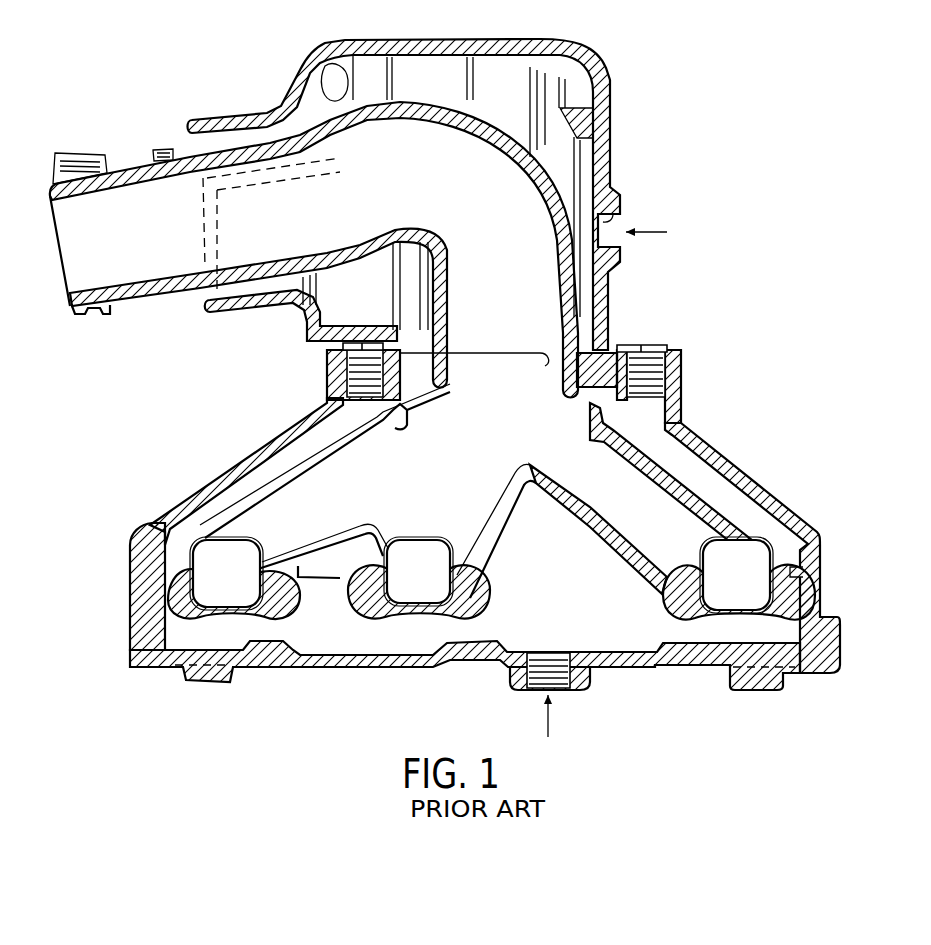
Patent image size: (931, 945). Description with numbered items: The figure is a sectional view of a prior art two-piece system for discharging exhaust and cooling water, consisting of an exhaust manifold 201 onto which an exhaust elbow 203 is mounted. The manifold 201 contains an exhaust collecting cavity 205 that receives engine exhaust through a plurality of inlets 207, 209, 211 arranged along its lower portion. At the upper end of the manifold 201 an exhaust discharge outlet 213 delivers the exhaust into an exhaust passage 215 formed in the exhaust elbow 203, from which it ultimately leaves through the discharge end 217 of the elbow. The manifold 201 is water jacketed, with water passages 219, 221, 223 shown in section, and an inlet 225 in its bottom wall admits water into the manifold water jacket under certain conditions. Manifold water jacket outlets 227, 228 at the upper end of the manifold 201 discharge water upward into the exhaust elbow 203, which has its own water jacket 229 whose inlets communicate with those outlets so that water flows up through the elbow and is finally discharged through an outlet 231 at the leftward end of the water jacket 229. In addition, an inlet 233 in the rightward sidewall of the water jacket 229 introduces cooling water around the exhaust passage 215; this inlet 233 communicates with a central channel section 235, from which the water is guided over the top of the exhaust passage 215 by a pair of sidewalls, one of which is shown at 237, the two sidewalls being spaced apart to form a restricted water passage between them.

The exhaust manifold 201 is at (192, 449).
The exhaust elbow 203 is at (648, 86).
The exhaust collecting cavity 205 is at (488, 446).
The inlet 207 is at (238, 543).
The inlet 209 is at (421, 541).
The inlet 211 is at (713, 547).
The exhaust discharge outlet 213 is at (547, 395).
The exhaust passage 215 is at (440, 189).
The discharge end 217 is at (58, 262).
The water passage 219 is at (253, 482).
The water passage 221 is at (687, 458).
The water passage 223 is at (578, 603).
The inlet 225 is at (560, 690).
The manifold water jacket outlet 227 is at (427, 367).
The manifold water jacket outlet 228 is at (585, 377).
The water jacket 229 is at (543, 57).
The outlet 231 is at (187, 133).
The inlet 233 is at (620, 220).
The central channel section 235 is at (583, 162).
The sidewall 237 is at (497, 67).